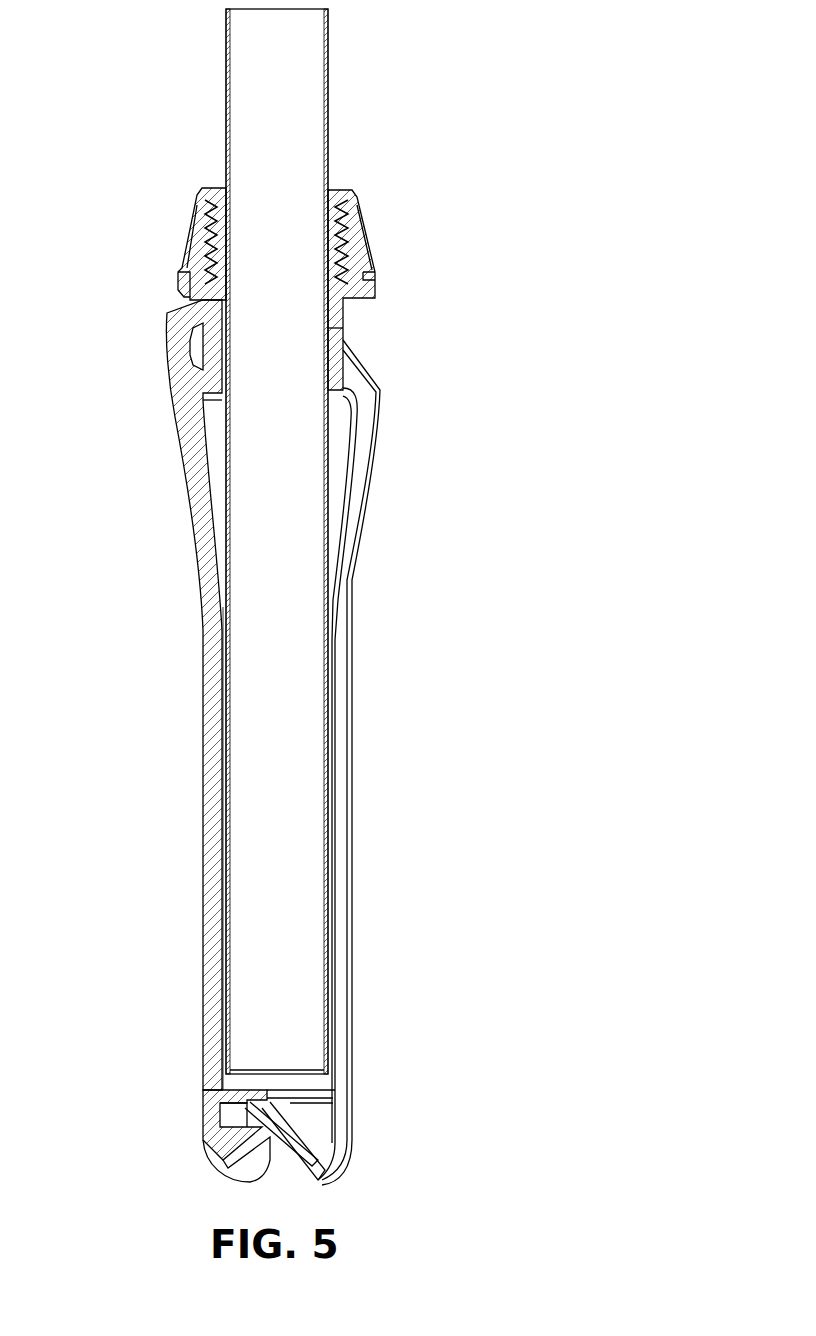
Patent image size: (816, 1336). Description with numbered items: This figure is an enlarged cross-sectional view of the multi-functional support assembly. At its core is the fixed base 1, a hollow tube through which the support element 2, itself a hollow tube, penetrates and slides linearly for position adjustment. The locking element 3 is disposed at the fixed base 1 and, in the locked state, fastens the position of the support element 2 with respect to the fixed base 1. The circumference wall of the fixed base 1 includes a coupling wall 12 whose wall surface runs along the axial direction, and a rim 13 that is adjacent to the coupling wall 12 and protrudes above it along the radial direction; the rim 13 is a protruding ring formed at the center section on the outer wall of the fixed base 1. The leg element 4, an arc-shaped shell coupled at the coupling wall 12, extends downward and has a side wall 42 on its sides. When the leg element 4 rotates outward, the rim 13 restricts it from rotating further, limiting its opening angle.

The fixed base 1 is at (208, 382).
The support element 2 is at (230, 107).
The locking element 3 is at (205, 218).
The leg element 4 is at (348, 617).
The coupling wall 12 is at (345, 328).
The rim 13 is at (185, 318).
The side wall 42 is at (342, 772).